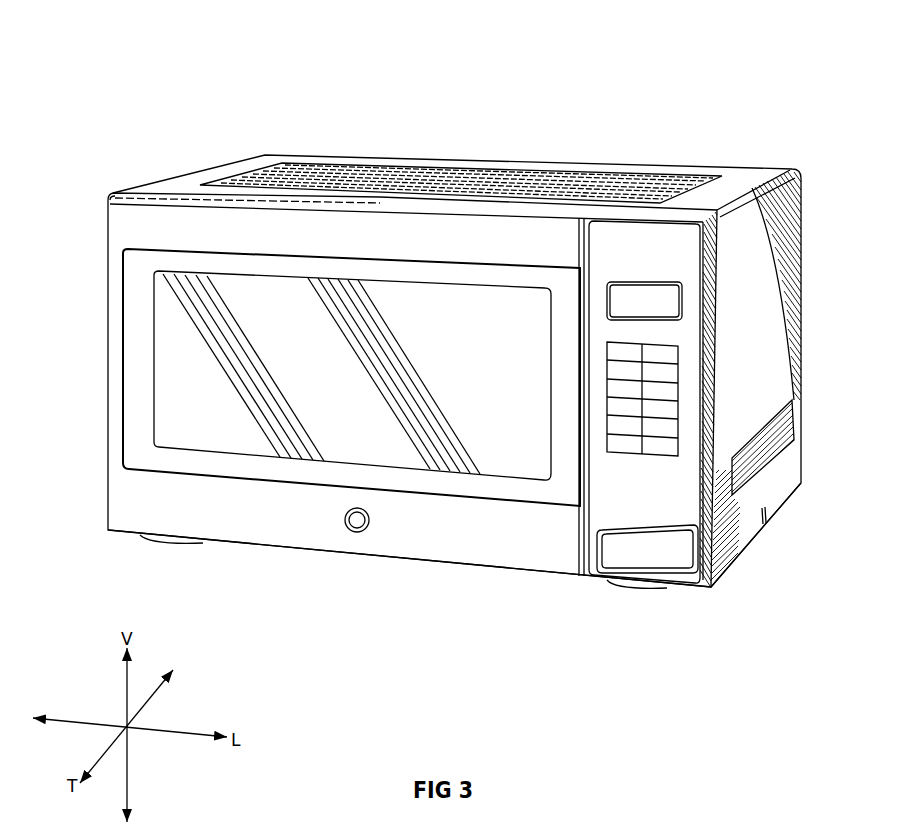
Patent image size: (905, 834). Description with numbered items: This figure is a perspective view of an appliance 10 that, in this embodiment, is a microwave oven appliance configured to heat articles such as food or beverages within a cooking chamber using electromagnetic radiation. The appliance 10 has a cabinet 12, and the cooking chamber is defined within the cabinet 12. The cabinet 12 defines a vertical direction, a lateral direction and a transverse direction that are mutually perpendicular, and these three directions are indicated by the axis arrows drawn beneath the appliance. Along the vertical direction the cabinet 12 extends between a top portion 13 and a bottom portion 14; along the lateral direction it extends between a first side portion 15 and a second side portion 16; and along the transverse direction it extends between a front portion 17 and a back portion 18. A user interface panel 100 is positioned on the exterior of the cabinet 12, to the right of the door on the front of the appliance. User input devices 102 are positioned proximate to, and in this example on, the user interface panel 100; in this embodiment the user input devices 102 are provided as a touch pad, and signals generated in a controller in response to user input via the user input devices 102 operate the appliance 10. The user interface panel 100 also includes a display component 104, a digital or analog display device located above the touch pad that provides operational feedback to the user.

The appliance 10 is at (164, 86).
The cabinet 12 is at (345, 175).
The top portion 13 is at (757, 192).
The bottom portion 14 is at (768, 524).
The first side portion 15 is at (104, 384).
The second side portion 16 is at (750, 313).
The front portion 17 is at (102, 193).
The back portion 18 is at (272, 152).
The user interface panel 100 is at (643, 492).
The user input device 102 is at (667, 410).
The display component 104 is at (660, 298).